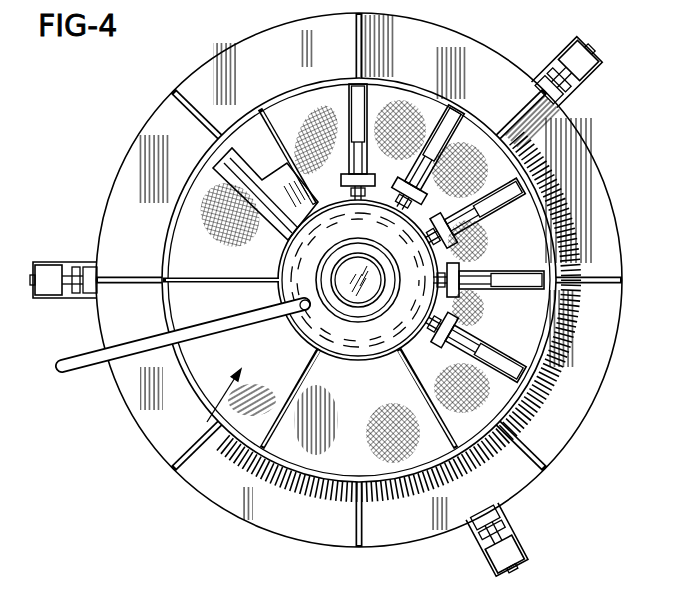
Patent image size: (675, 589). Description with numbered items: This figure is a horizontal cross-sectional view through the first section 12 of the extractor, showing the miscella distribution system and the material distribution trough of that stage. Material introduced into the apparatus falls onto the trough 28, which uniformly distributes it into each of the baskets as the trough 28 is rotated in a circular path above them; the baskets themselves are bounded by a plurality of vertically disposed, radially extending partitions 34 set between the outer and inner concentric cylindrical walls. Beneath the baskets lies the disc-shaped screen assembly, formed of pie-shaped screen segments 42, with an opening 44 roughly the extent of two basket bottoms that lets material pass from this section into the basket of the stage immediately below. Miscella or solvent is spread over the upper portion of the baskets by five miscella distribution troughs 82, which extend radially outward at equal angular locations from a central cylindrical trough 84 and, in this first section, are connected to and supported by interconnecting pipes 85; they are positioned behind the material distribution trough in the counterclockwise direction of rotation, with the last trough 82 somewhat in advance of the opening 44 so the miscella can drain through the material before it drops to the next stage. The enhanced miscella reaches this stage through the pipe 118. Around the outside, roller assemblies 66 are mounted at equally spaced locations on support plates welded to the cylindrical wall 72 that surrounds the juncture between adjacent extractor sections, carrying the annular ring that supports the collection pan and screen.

The first section 12 is at (546, 366).
The trough 28 is at (257, 181).
The partitions 34 is at (190, 277).
The pie-shaped screen segments 42 is at (392, 97).
The opening 44 is at (207, 422).
The roller assemblies 66 is at (50, 266).
The cylindrical wall 72 is at (566, 428).
The miscella distribution troughs 82 is at (508, 200).
The central cylindrical trough 84 is at (306, 343).
The interconnecting pipes 85 is at (490, 288).
The pipe 118 is at (76, 378).